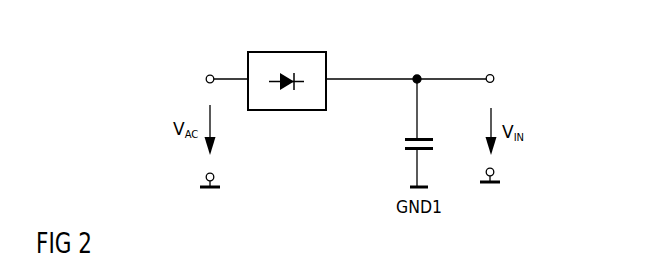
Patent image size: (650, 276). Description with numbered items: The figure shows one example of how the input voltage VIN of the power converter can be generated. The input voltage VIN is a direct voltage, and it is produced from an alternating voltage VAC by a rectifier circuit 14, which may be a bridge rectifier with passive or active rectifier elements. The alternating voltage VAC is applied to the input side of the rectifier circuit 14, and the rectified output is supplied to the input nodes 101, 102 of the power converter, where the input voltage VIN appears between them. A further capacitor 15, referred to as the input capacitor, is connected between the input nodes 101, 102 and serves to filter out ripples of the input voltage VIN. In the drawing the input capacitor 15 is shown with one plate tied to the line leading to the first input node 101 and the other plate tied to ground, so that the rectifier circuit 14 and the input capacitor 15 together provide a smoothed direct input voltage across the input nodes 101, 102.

The rectifier circuit 14 is at (285, 52).
The input capacitor 15 is at (437, 143).
The input node 101 is at (493, 74).
The input node 102 is at (500, 175).